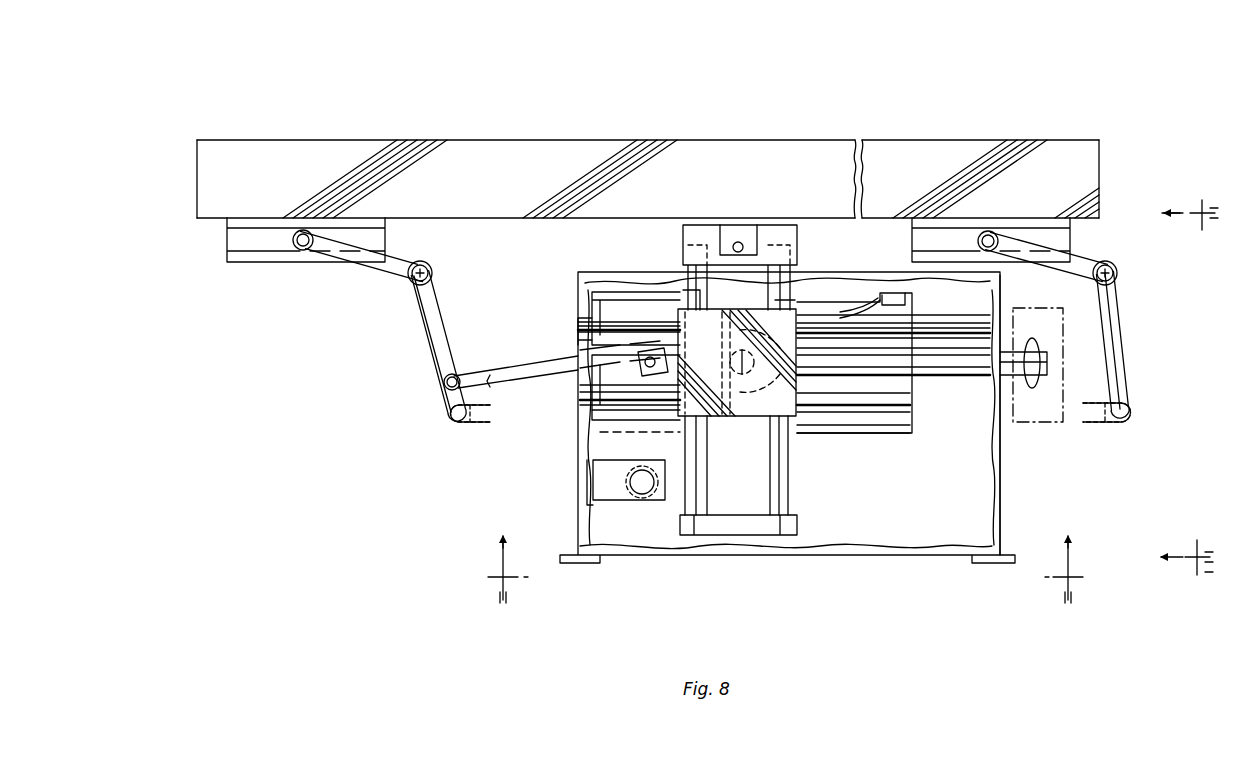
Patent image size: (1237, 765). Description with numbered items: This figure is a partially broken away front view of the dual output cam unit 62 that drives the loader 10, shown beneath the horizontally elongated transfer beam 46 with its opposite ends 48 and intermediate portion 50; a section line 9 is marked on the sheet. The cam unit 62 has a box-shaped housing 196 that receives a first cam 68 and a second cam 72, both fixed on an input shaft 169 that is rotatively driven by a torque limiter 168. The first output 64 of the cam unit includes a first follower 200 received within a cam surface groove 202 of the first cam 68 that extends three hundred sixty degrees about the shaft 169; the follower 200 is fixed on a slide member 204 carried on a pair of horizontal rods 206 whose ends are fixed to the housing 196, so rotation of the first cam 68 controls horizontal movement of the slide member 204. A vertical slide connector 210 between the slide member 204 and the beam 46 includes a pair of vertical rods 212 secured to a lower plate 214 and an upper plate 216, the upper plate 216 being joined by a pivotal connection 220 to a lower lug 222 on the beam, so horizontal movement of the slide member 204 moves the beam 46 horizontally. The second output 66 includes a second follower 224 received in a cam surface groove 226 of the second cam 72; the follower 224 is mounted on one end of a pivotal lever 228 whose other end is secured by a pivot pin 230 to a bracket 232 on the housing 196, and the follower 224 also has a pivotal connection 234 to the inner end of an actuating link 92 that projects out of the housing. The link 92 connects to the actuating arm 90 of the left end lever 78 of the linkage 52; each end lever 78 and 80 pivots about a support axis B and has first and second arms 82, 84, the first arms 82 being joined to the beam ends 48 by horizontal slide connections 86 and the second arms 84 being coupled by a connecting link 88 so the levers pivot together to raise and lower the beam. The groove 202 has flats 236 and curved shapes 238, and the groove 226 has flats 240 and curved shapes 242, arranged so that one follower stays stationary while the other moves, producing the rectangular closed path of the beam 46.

The loader 10 is at (328, 58).
The section line 9 is at (786, 572).
The transfer beam 46 is at (447, 140).
The opposite ends 48 is at (248, 150).
The intermediate portion 50 is at (610, 145).
The linkage 52 is at (462, 426).
The dual output cam unit 62 is at (1004, 488).
The first output 64 is at (798, 241).
The second output 66 is at (658, 323).
The first cam 68 is at (876, 438).
The second cam 72 is at (592, 440).
The end lever 78 is at (428, 338).
The end lever 80 is at (1130, 310).
The first arm 82 is at (387, 262).
The second arm 84 is at (445, 387).
The horizontal slide connection 86 is at (295, 264).
The connecting link 88 is at (478, 426).
The actuating arm 90 is at (450, 322).
The actuating link 92 is at (492, 372).
The pivotal support axis B is at (429, 271).
The torque limiter 168 is at (1048, 307).
The input shaft 169 is at (970, 384).
The box-shaped housing 196 is at (1003, 455).
The first follower 200 is at (798, 372).
The cam surface groove 202 is at (874, 300).
The slide member 204 is at (812, 342).
The horizontal rods 206 is at (888, 394).
The vertical slide connector 210 is at (793, 298).
The vertical rods 212 is at (770, 463).
The lower plate 214 is at (755, 535).
The upper plate 216 is at (775, 250).
The pivotal connection 220 is at (728, 244).
The lower lug 222 is at (740, 240).
The second follower 224 is at (646, 356).
The cam surface groove 226 is at (638, 444).
The pivotal lever 228 is at (729, 364).
The pivot pin 230 is at (651, 492).
The bracket 232 is at (598, 498).
The pivotal connection 234 is at (625, 375).
The flats 236 is at (757, 378).
The curved shapes 238 is at (740, 362).
The flats 240 is at (688, 298).
The curved shapes 242 is at (600, 420).